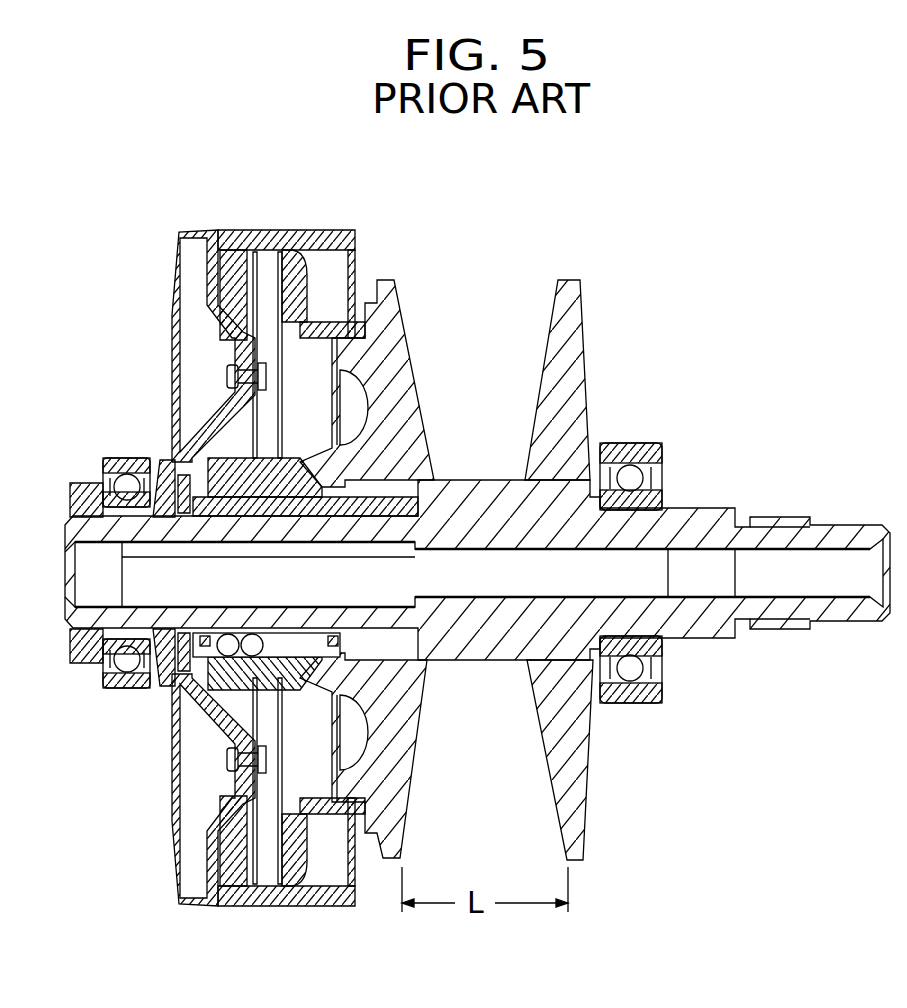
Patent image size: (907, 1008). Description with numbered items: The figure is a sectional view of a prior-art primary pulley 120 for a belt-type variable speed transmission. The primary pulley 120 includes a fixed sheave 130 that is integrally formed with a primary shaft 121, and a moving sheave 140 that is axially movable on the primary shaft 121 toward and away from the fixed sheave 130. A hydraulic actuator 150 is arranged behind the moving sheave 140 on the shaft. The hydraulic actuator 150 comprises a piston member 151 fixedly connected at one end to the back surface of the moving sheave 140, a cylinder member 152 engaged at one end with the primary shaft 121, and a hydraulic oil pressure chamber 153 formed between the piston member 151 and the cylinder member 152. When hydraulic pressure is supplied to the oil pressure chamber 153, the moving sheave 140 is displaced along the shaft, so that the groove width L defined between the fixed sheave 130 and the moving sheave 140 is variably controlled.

The primary pulley 120 is at (477, 507).
The primary shaft 121 is at (697, 520).
The fixed sheave 130 is at (582, 340).
The moving sheave 140 is at (376, 538).
The hydraulic actuator 150 is at (244, 514).
The piston member 151 is at (288, 270).
The cylinder member 152 is at (228, 221).
The hydraulic oil pressure chamber 153 is at (292, 414).